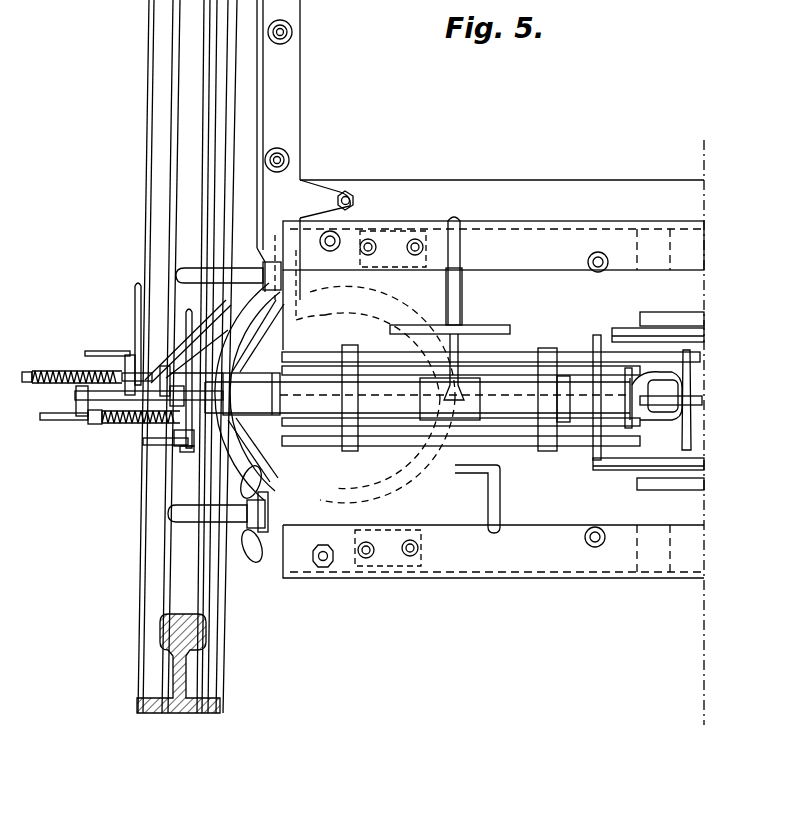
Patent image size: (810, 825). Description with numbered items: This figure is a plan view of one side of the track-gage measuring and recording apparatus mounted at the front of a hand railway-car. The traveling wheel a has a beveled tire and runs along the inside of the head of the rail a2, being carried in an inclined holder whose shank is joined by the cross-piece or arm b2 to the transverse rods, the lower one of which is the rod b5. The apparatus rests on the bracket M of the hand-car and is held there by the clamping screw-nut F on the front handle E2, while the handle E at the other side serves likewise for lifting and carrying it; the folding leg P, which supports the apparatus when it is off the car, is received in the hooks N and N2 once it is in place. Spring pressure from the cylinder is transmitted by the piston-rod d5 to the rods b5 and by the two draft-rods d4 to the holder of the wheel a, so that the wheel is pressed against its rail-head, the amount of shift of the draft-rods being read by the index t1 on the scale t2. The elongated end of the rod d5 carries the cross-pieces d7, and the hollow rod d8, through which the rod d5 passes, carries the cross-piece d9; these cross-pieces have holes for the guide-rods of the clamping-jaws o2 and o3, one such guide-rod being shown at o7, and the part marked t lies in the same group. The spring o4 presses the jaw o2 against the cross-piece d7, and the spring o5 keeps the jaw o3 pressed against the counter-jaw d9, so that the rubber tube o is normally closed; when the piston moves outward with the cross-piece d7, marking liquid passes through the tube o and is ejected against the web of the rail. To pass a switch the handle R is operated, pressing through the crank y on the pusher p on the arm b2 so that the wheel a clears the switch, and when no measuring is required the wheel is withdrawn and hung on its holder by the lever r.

The traveling wheel a is at (335, 393).
The rail a2 is at (160, 607).
The bracket M is at (305, 150).
The handle E is at (190, 268).
The front handle E2 is at (190, 522).
The clamping screw-nut F is at (243, 560).
The folding leg P is at (489, 285).
The handle R is at (462, 246).
The hook N is at (606, 266).
The hook N2 is at (493, 551).
The rubber tube o is at (133, 292).
The clamping-jaw o2 is at (158, 352).
The clamping-jaw o3 is at (186, 452).
The spring o4 is at (56, 370).
The spring o5 is at (130, 423).
The vertical rod o7 is at (189, 312).
The crosshead t is at (188, 376).
The index t1 is at (660, 380).
The scale t2 is at (702, 400).
The cross-piece b2 is at (692, 378).
The transverse rod b5 is at (616, 332).
The draft-rod d4 is at (576, 366).
The piston-rod d5 is at (70, 396).
The cross-piece d7 is at (128, 360).
The hollow rod d8 is at (222, 417).
The cross-piece d9 is at (172, 440).
The pusher p is at (508, 356).
The crank y is at (468, 356).
The lever r is at (501, 503).